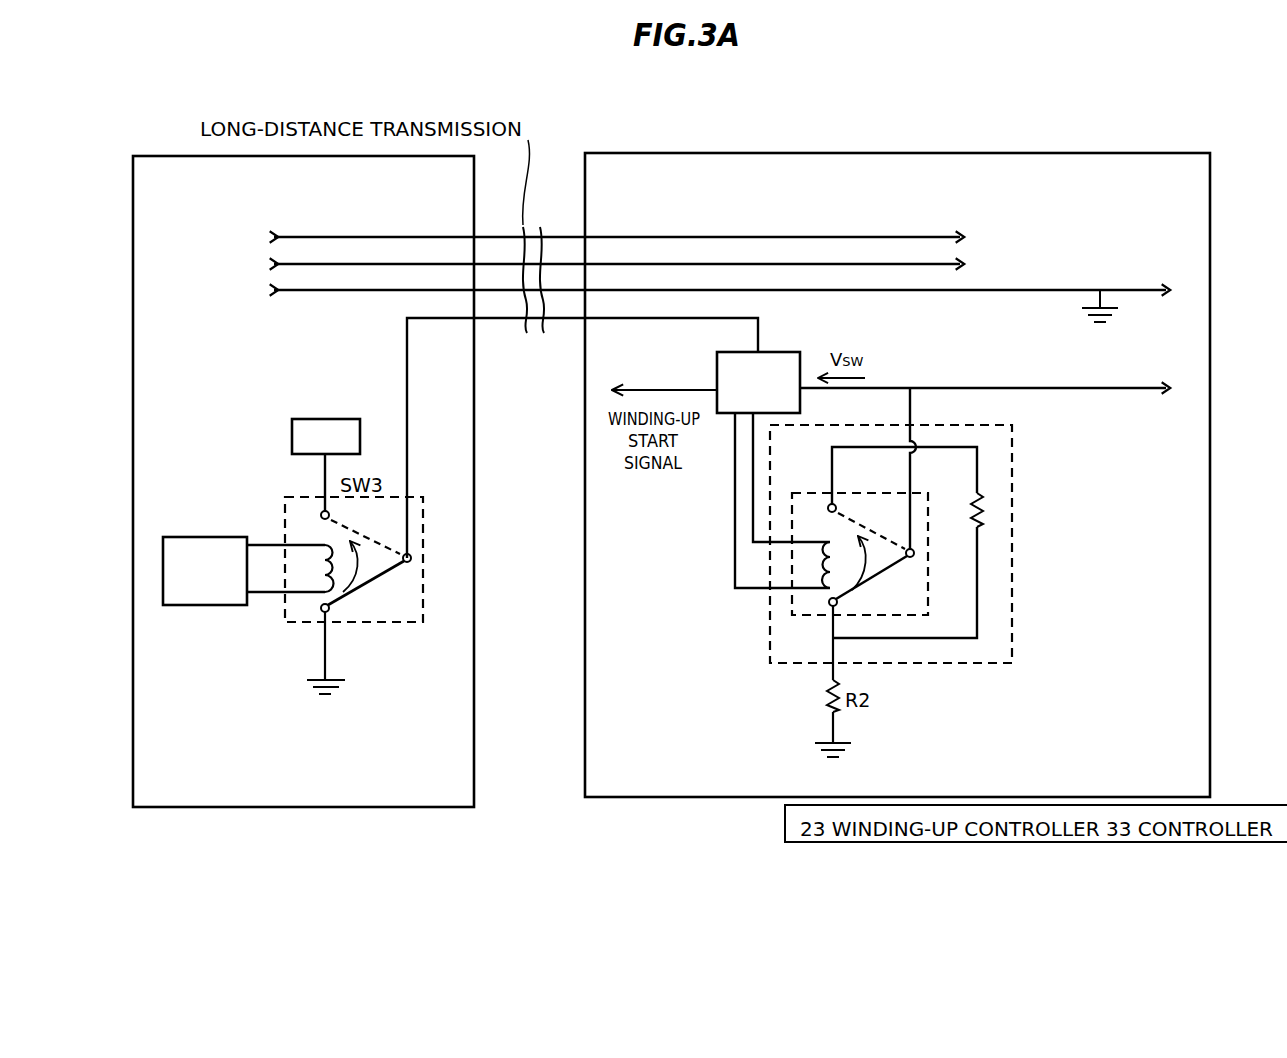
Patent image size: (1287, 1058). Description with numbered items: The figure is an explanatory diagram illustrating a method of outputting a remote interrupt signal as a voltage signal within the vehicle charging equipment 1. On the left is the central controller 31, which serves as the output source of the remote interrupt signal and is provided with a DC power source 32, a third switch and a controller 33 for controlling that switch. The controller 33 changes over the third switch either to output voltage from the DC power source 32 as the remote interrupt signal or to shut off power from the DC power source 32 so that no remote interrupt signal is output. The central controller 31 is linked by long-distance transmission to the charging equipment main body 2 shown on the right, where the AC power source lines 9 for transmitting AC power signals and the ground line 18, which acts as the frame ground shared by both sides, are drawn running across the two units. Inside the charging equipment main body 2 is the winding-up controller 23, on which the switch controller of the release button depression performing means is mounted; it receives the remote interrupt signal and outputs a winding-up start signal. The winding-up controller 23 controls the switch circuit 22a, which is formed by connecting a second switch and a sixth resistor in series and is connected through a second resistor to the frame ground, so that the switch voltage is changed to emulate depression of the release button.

The vehicle charging equipment 1 is at (722, 146).
The charging equipment main body 2 is at (1129, 153).
The AC power source lines 9 is at (702, 276).
The ground line 18 is at (1025, 290).
The switch circuit 22a is at (1012, 648).
The winding-up controller 23 is at (717, 358).
The central controller 31 is at (148, 156).
The DC power source 32 is at (294, 419).
The controller 33 is at (205, 537).